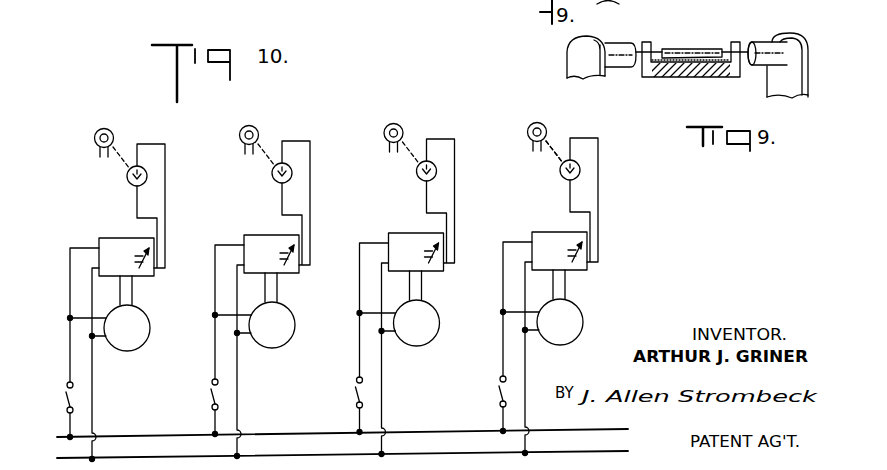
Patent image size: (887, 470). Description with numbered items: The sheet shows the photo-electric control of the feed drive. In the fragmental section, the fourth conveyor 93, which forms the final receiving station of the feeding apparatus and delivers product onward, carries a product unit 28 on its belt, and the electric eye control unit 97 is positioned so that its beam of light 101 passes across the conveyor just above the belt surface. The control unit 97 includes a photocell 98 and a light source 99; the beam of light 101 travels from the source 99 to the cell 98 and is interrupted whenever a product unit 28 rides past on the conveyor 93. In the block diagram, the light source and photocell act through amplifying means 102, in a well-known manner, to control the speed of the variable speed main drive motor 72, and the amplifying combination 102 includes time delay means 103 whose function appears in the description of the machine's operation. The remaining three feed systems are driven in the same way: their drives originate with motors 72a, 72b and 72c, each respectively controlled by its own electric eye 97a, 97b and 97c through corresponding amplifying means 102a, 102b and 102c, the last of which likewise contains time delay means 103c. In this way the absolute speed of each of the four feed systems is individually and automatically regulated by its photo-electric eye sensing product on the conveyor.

In FIG. 9, the strip workpiece 28 is at (684, 47).
In FIG. 9, the fourth conveyor 93 is at (694, 64).
In FIG. 9, the photocell 98 is at (597, 36).
In FIG. 10, the photocell 98 is at (527, 129).
In FIG. 9, the light source 99 is at (768, 86).
In FIG. 10, the light source 99 is at (561, 178).
In FIG. 10, the electric eye control unit 97 is at (562, 137).
In FIG. 10, the electric eye 97a is at (414, 134).
In FIG. 10, the electric eye 97b is at (270, 136).
In FIG. 10, the electric eye 97c is at (125, 139).
In FIG. 10, the beam of light 101 is at (553, 151).
In FIG. 10, the amplifying means 102 is at (547, 231).
In FIG. 10, the amplifier control unit 102a is at (407, 238).
In FIG. 10, the amplifier control unit 102b is at (262, 240).
In FIG. 10, the amplifier control unit 102c is at (117, 243).
In FIG. 10, the time delay means 103 is at (582, 279).
In FIG. 10, the adjustable resistor 103c is at (171, 268).
In FIG. 10, the variable speed main drive motor 72 is at (584, 315).
In FIG. 10, the motor 72a is at (437, 315).
In FIG. 10, the motor 72b is at (293, 317).
In FIG. 10, the motor 72c is at (149, 322).